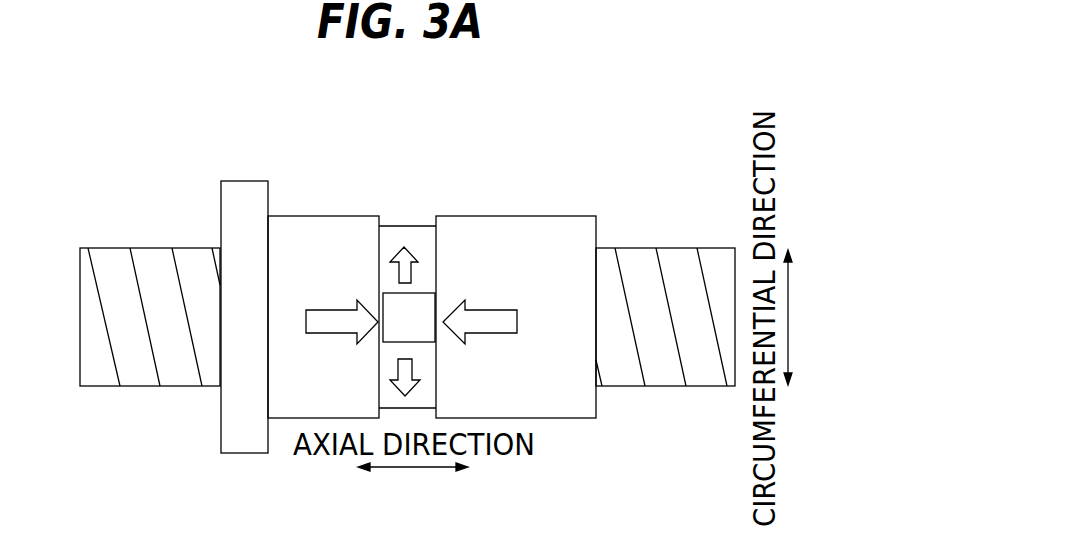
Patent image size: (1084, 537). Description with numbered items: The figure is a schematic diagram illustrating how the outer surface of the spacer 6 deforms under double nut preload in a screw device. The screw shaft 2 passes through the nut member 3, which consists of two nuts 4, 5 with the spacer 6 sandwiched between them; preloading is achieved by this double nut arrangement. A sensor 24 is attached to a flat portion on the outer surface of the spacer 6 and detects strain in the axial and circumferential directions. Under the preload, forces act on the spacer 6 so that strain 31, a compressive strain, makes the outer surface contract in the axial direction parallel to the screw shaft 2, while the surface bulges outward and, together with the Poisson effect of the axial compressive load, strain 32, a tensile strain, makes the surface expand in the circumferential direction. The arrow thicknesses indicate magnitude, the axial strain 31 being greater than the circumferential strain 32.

The screw shaft 2 is at (670, 262).
The nut member 3 is at (556, 153).
The nut 4 is at (513, 230).
The nut 5 is at (300, 228).
The spacer 6 is at (408, 238).
The sensor 24 is at (424, 292).
The strain 31 is at (325, 333).
The strain 32 is at (397, 266).